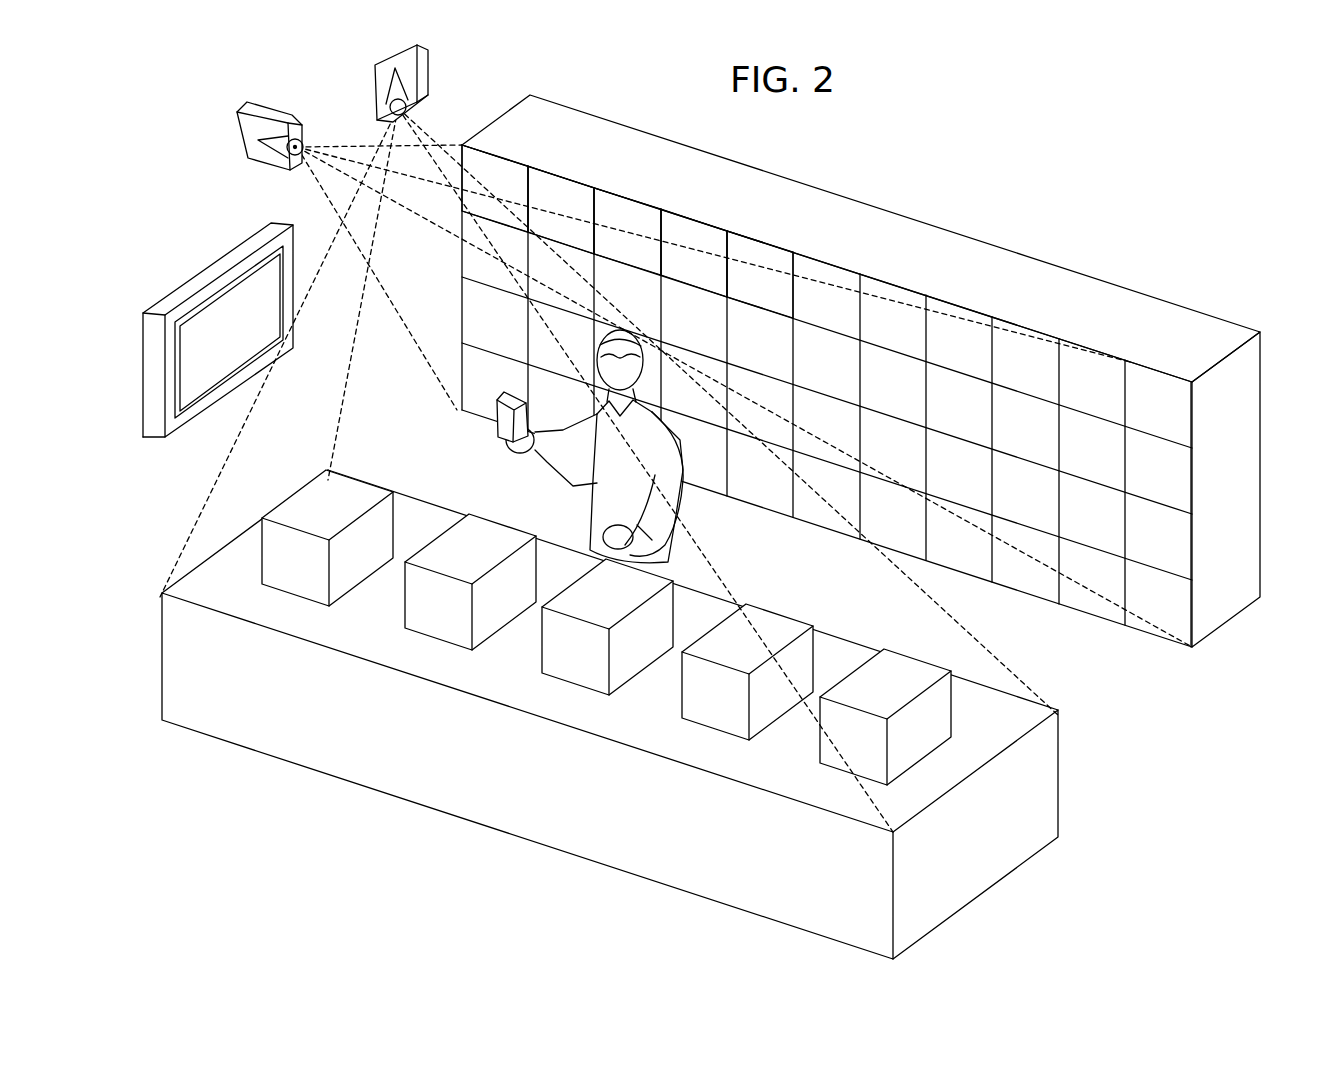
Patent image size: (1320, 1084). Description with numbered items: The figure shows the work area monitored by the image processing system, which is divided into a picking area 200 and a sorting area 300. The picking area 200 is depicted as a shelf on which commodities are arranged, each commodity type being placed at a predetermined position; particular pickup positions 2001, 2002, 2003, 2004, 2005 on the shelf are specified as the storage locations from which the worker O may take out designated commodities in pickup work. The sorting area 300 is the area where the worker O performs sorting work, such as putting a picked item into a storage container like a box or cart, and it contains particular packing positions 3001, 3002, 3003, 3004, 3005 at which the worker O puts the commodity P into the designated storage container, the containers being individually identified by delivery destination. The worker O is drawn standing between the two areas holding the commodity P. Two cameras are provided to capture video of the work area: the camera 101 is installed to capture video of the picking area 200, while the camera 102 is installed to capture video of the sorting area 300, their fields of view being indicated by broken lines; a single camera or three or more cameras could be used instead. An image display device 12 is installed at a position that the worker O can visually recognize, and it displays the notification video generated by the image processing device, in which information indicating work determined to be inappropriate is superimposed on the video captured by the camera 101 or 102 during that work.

The image display device 12 is at (206, 268).
The camera 101 is at (237, 140).
The camera 102 is at (428, 66).
The picking area 200 is at (836, 356).
The pickup position 2001 is at (497, 176).
The pickup position 2002 is at (564, 192).
The pickup position 2003 is at (630, 213).
The pickup position 2004 is at (689, 252).
The pickup position 2005 is at (753, 268).
The sorting area 300 is at (692, 620).
The packing position 3001 is at (315, 507).
The packing position 3002 is at (452, 558).
The packing position 3003 is at (594, 602).
The packing position 3004 is at (726, 652).
The packing position 3005 is at (868, 690).
The commodity P is at (498, 425).
The worker O is at (592, 492).